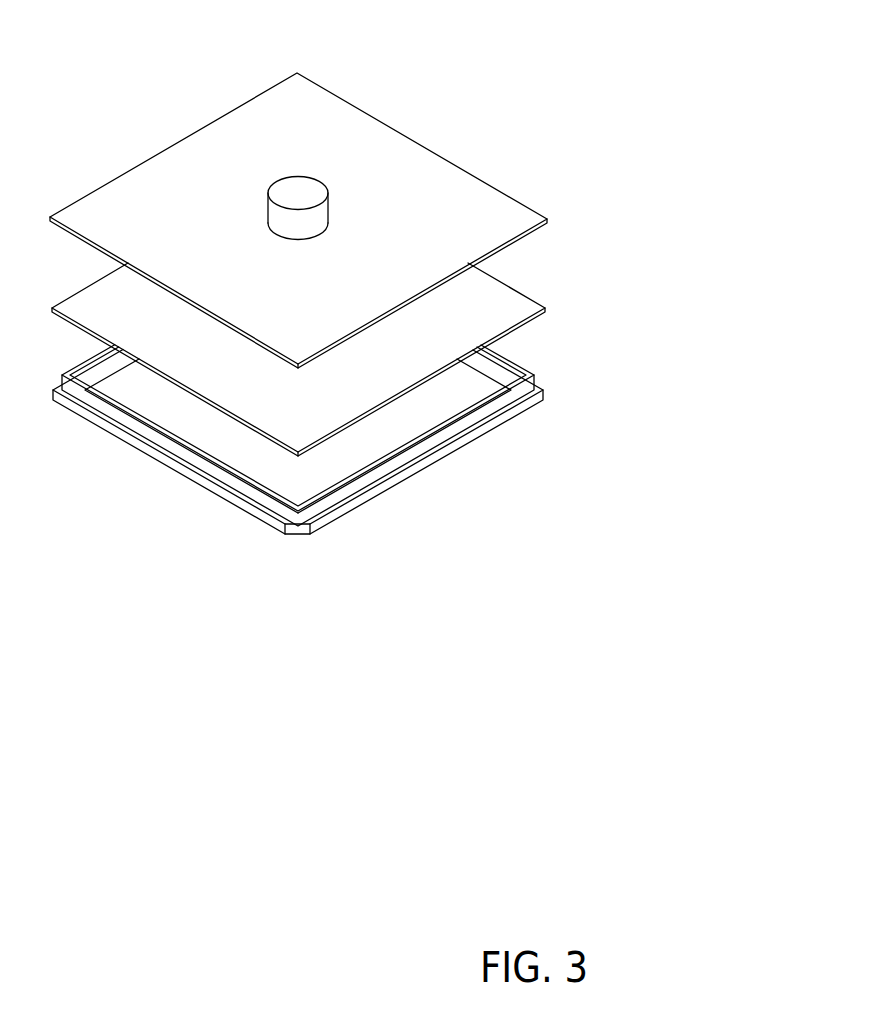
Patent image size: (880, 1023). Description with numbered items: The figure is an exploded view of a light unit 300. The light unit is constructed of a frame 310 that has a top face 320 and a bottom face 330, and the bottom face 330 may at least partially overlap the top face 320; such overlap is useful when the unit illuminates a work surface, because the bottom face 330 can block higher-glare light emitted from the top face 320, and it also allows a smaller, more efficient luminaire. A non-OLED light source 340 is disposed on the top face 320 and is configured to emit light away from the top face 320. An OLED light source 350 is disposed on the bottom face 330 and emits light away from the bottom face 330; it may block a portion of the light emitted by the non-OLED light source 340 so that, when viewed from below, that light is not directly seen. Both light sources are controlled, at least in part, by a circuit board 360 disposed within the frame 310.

The light unit 300 is at (467, 38).
The frame 310 is at (388, 439).
The top face 320 is at (225, 284).
The bottom face 330 is at (226, 436).
The non-OLED light source 340 is at (338, 185).
The OLED light source 350 is at (555, 310).
The circuit board 360 is at (387, 214).